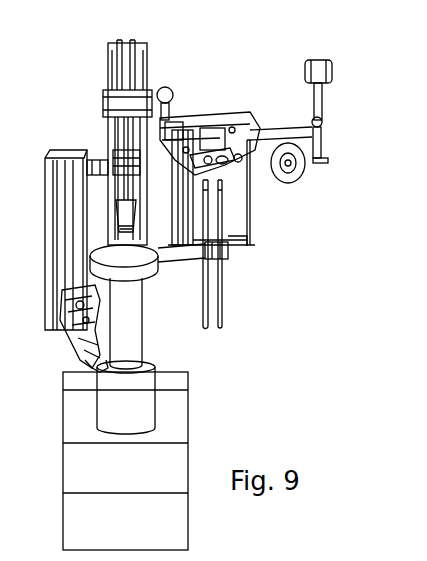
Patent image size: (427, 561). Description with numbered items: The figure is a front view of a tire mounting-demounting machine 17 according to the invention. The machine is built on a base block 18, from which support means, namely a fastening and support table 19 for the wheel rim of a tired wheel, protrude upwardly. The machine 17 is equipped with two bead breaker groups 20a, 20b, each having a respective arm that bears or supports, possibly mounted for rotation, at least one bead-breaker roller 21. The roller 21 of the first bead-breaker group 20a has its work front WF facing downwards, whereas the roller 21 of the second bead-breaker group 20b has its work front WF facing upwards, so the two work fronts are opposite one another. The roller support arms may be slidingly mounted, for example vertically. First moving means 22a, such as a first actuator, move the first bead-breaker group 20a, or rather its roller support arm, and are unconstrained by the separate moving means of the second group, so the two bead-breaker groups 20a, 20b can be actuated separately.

The tire mounting-demounting machine 17 is at (290, 277).
The base block 18 is at (167, 518).
The fastening and support table 19 is at (148, 278).
The first bead-breaker group 20a is at (214, 113).
The second bead-breaker group 20b is at (68, 333).
The bead-breaker roller 21 is at (277, 178).
The first moving means 22a is at (220, 295).
The work front WF is at (297, 182).